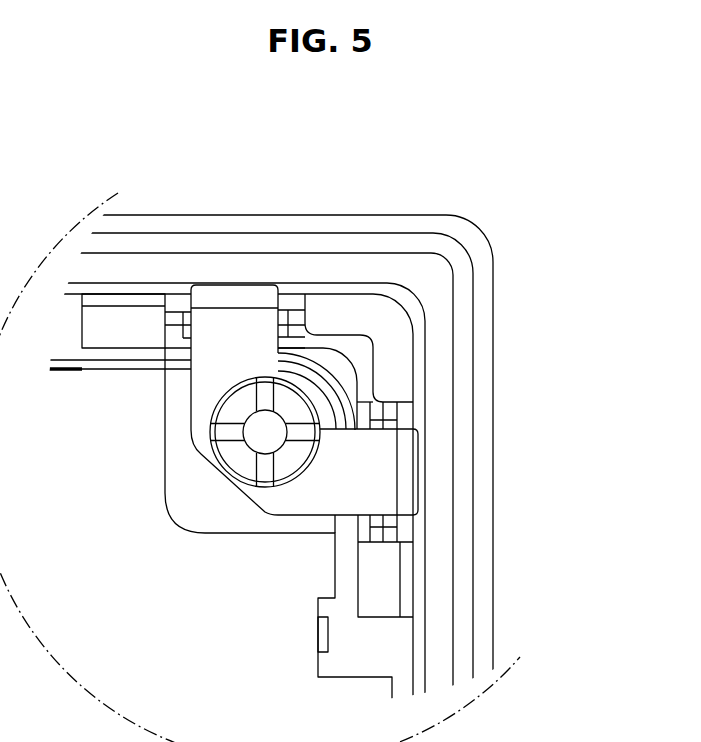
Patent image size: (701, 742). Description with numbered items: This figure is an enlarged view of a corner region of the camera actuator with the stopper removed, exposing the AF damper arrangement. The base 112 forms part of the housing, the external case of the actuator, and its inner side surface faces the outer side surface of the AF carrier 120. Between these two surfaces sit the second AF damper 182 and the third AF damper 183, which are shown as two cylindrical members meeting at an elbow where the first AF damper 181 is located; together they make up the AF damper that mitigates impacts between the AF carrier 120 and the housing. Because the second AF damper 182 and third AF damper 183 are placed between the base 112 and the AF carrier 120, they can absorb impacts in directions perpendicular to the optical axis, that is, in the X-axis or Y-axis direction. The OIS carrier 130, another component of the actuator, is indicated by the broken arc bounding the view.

The base 112 is at (340, 266).
The AF carrier 120 is at (362, 353).
The OIS carrier 130 is at (220, 611).
The first AF damper 181 is at (258, 432).
The second AF damper 182 is at (407, 470).
The third AF damper 183 is at (237, 297).